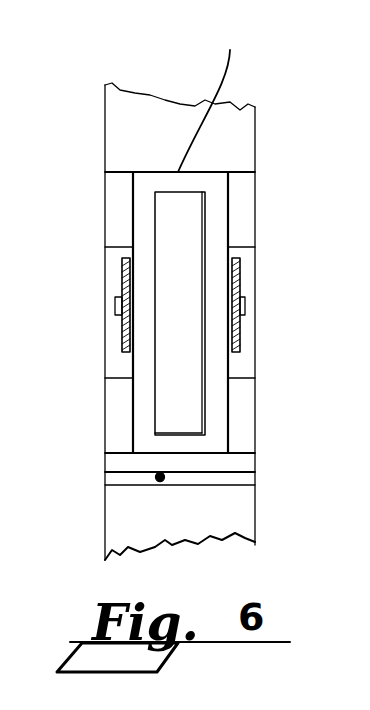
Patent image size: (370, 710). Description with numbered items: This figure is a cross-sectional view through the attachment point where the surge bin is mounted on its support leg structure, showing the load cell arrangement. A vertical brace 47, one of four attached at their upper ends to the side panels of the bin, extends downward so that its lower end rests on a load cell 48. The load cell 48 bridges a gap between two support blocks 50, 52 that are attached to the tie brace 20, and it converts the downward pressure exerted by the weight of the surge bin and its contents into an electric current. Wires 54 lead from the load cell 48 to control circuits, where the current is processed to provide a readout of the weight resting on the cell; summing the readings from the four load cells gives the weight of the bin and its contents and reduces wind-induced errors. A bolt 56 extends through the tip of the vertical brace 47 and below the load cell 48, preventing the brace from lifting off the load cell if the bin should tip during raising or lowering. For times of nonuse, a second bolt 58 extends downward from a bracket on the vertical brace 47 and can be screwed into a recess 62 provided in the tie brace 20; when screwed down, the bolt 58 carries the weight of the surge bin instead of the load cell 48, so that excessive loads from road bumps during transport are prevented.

The tie brace 20 is at (115, 125).
The vertical brace 47 is at (123, 270).
The load cell 48 is at (142, 397).
The support block 50 is at (243, 208).
The support block 52 is at (240, 420).
The wires 54 is at (228, 75).
The bolt 56 is at (245, 307).
The bolt 58 is at (157, 485).
The recess 62 is at (115, 478).